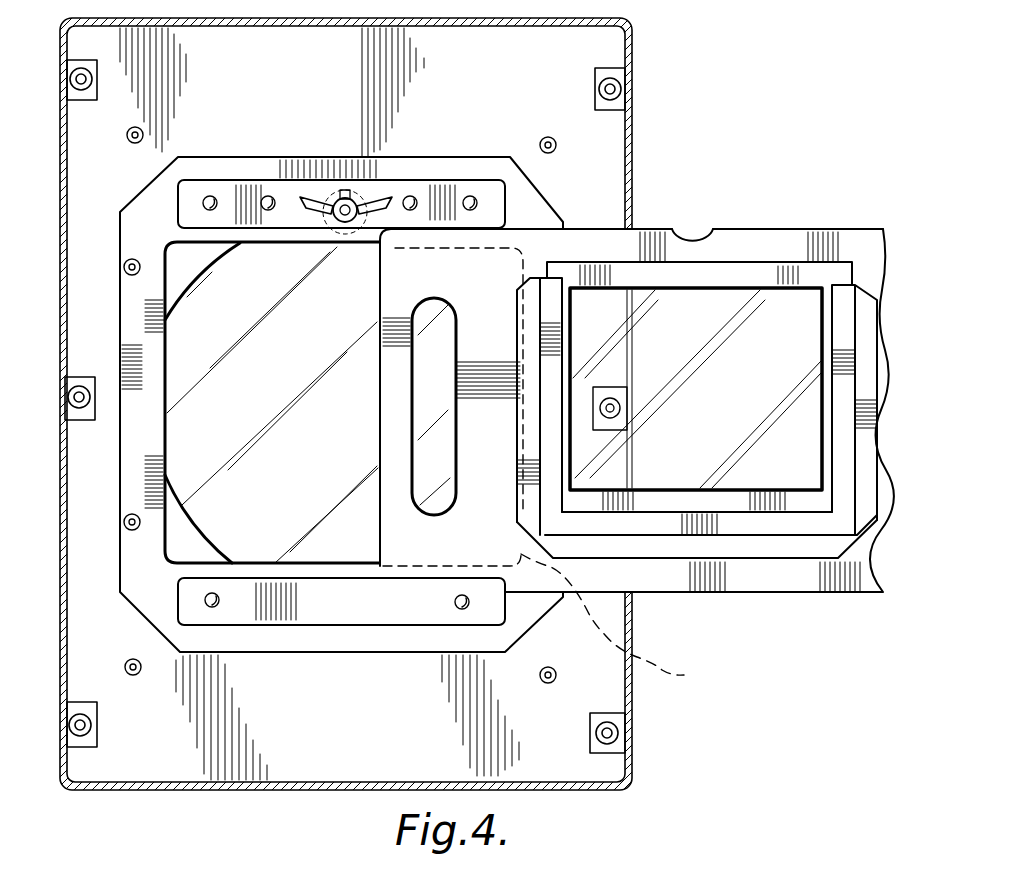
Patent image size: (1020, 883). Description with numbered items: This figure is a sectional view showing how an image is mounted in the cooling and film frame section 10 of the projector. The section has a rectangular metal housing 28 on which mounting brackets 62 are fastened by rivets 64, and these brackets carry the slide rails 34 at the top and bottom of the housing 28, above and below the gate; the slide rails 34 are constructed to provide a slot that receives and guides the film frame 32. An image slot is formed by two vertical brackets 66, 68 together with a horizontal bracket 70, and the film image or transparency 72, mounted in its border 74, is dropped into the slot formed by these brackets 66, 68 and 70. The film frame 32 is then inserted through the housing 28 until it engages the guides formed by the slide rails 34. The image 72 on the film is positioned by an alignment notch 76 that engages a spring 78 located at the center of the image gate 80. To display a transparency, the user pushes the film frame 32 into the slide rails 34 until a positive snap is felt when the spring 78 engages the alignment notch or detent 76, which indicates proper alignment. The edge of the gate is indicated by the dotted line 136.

The cooling and film frame section 10 is at (477, 403).
The rectangular metal housing 28 is at (632, 23).
The film frame 32 is at (637, 402).
The slide rails 34 is at (410, 198).
The mounting bracket 62 is at (248, 160).
The rivets 64 is at (124, 522).
The vertical bracket 66 is at (848, 300).
The vertical bracket 68 is at (530, 306).
The horizontal bracket 70 is at (765, 545).
The film image 72 is at (738, 394).
The border 74 is at (640, 278).
The alignment notch 76 is at (699, 230).
The spring 78 is at (303, 200).
The image gate 80 is at (168, 338).
The dotted line 136 is at (626, 622).